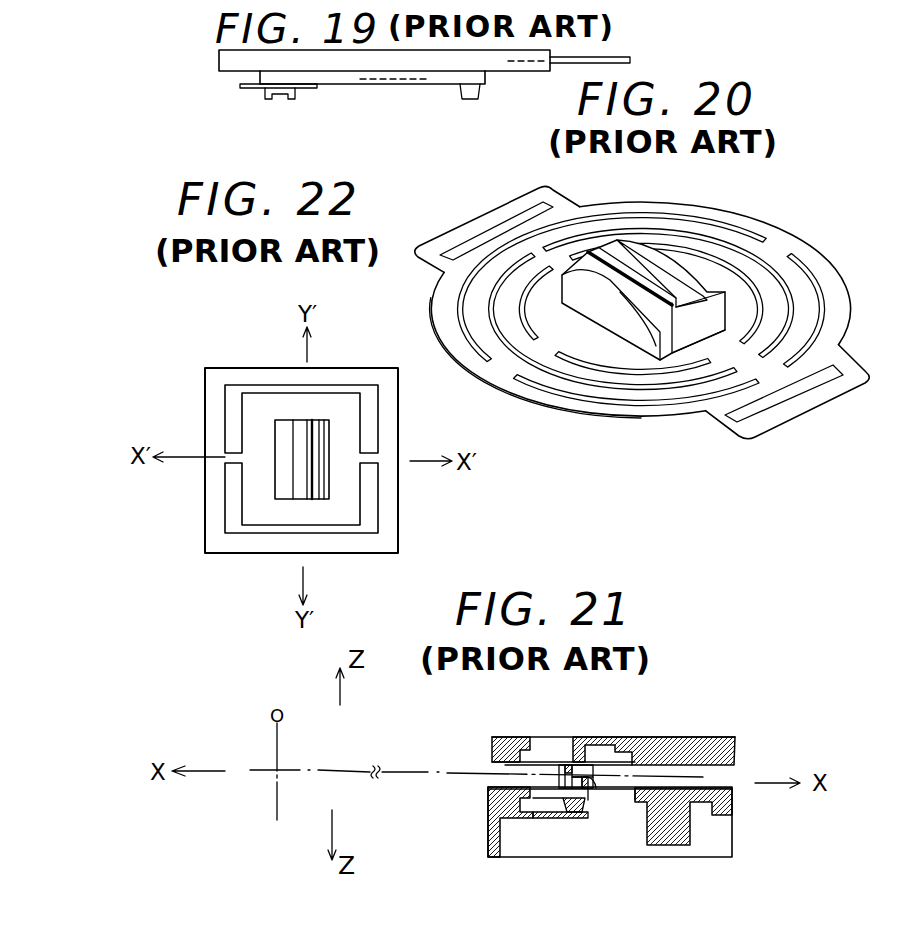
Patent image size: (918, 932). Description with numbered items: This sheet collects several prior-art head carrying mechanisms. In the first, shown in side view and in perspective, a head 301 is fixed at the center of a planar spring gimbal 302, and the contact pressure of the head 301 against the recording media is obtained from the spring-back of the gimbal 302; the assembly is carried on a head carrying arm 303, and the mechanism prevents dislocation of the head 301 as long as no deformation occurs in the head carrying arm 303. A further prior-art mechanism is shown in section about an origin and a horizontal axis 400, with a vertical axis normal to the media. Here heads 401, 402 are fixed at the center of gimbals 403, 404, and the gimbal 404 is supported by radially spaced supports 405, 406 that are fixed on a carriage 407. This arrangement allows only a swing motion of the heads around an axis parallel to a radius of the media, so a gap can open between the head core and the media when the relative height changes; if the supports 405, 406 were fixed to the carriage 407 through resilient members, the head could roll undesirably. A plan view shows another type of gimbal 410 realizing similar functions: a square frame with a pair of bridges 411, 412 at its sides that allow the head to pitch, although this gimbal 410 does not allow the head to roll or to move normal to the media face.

In FIG. 19, the head 301 is at (284, 100).
In FIG. 20, the head 301 is at (612, 253).
In FIG. 19, the planar spring gimbal 302 is at (317, 89).
In FIG. 20, the planar spring gimbal 302 is at (742, 243).
In FIG. 19, the head carrying arm 303 is at (219, 70).
In FIG. 21, the X axis 400 is at (412, 770).
In FIG. 21, the head 401 is at (580, 768).
In FIG. 21, the head 402 is at (595, 783).
In FIG. 21, the gimbal 403 is at (548, 758).
In FIG. 21, the gimbal 404 is at (535, 818).
In FIG. 21, the support 405 is at (563, 805).
In FIG. 21, the support 406 is at (588, 790).
In FIG. 21, the carriage 407 is at (488, 840).
In FIG. 22, the gimbal frame 410 is at (218, 376).
In FIG. 22, the bridge 411 is at (235, 467).
In FIG. 22, the bridge 412 is at (372, 468).